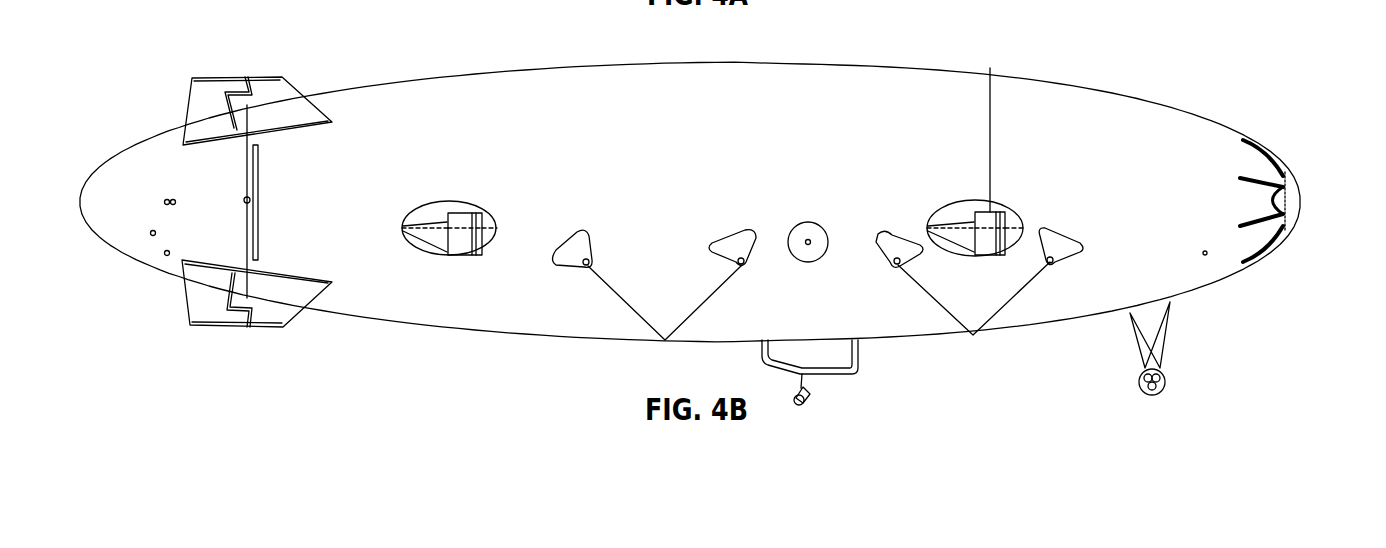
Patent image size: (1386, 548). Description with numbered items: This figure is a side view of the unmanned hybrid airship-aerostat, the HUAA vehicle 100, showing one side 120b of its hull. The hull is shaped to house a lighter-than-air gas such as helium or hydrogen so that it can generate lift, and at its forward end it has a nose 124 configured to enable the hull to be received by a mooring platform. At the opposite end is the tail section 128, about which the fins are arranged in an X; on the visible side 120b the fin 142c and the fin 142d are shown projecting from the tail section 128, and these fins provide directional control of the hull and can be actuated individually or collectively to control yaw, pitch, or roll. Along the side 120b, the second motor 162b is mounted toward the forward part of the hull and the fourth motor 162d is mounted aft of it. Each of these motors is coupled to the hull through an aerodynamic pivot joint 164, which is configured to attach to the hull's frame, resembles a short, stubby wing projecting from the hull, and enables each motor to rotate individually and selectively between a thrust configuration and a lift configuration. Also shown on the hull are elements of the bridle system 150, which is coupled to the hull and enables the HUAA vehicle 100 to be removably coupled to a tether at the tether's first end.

The HUAA vehicle 100 is at (1186, 62).
The side of the hull 120b is at (800, 135).
The nose 124 is at (1300, 202).
The tail section 128 is at (217, 207).
The fin 142c is at (268, 78).
The fin 142d is at (262, 330).
The bridle system 150 is at (583, 232).
The second motor 162b is at (458, 213).
The fourth motor 162d is at (990, 257).
The aerodynamic pivot joint 164 is at (437, 250).